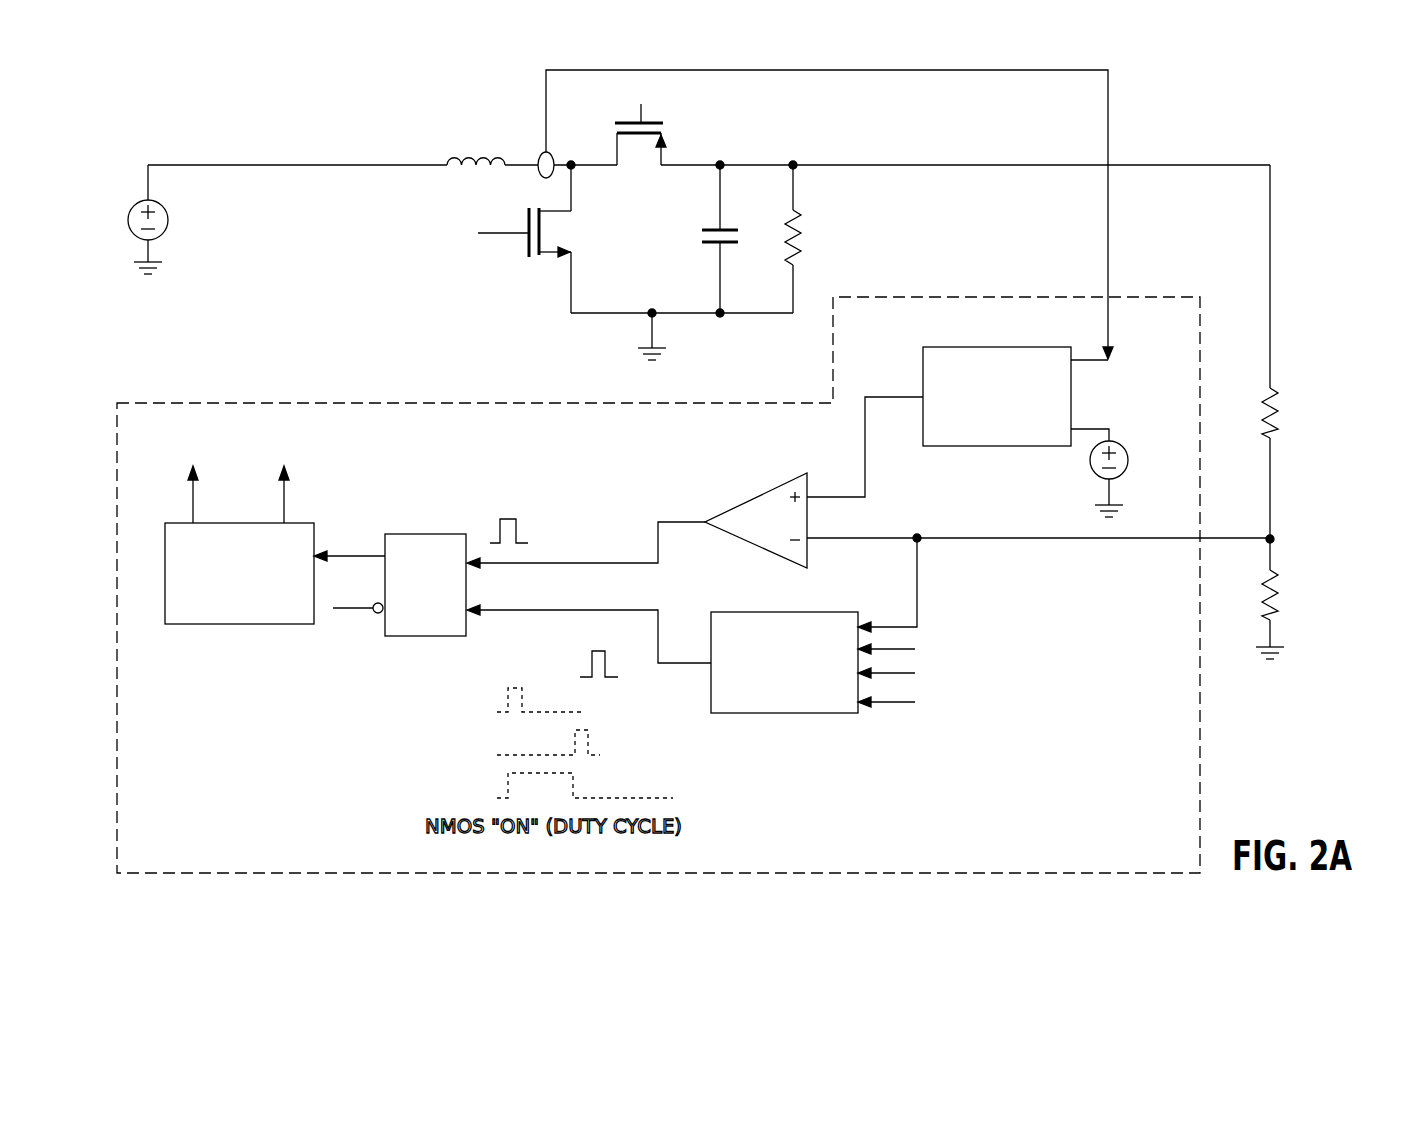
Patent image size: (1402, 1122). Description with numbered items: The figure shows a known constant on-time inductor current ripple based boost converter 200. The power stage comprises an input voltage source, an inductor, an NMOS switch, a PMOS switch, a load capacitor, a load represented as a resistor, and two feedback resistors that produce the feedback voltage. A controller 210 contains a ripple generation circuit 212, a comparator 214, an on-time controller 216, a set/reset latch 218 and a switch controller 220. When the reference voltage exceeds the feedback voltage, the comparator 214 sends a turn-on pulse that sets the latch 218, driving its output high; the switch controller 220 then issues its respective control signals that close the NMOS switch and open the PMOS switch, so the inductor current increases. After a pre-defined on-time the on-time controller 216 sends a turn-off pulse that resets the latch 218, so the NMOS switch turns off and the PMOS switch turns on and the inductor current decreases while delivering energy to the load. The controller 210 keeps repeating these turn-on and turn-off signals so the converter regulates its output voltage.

The constant on-time inductor current ripple based boost converter 200 is at (1307, 120).
The controller 210 is at (1205, 723).
The ripple generation circuit 212 is at (1020, 447).
The comparator 214 is at (770, 490).
The on-time controller 216 is at (795, 713).
The set/reset (SR) latch 218 is at (425, 534).
The switch controller 220 is at (240, 625).